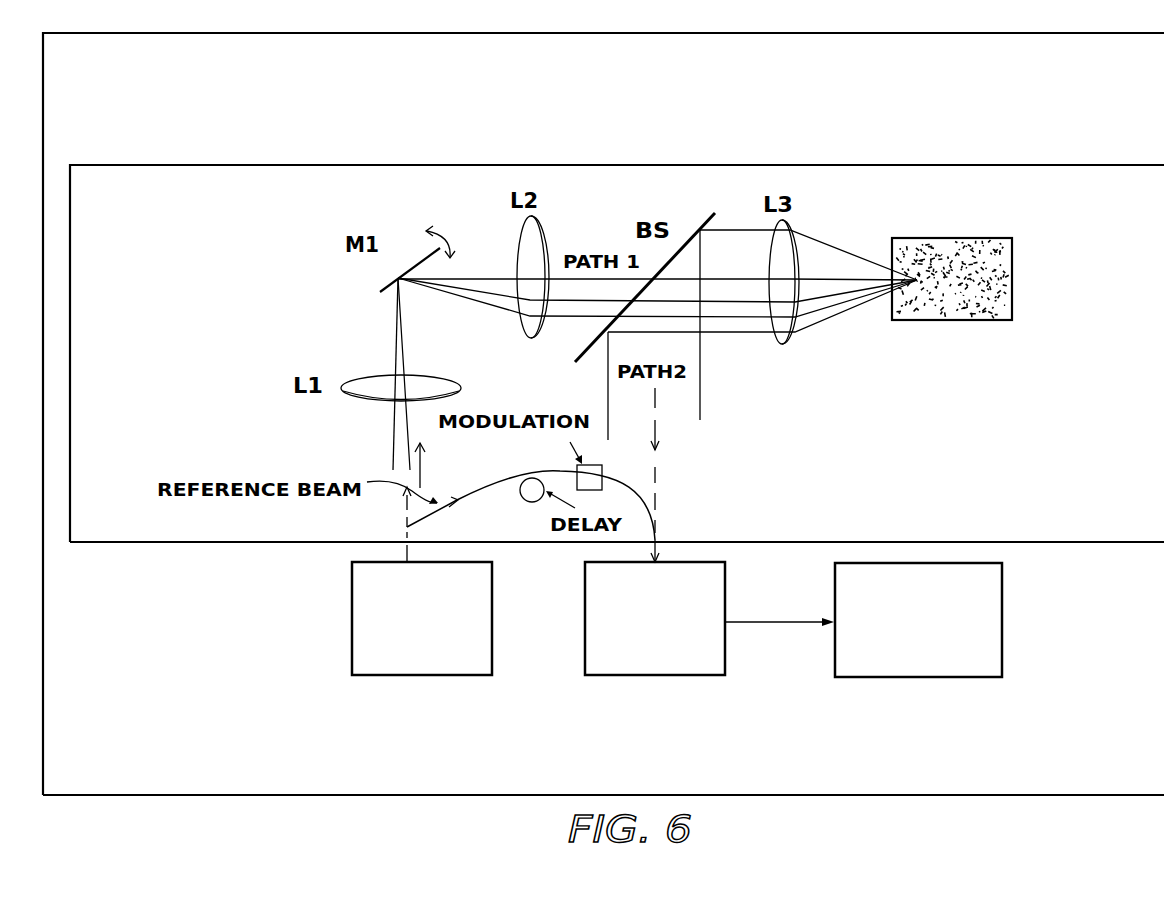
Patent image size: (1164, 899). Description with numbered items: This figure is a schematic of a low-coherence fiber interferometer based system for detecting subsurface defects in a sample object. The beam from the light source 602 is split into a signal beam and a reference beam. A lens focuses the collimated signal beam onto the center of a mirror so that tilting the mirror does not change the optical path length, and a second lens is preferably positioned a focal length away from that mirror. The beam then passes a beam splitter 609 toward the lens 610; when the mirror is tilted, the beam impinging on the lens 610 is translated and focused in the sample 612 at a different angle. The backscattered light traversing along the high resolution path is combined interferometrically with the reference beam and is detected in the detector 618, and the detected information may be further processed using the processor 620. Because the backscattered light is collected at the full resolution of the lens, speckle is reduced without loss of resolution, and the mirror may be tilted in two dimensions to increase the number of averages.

The light source 602 is at (433, 677).
The beam splitter 609 is at (698, 228).
The lens 610 is at (788, 343).
The sample 612 is at (980, 322).
The detector 618 is at (662, 677).
The processor 620 is at (928, 678).